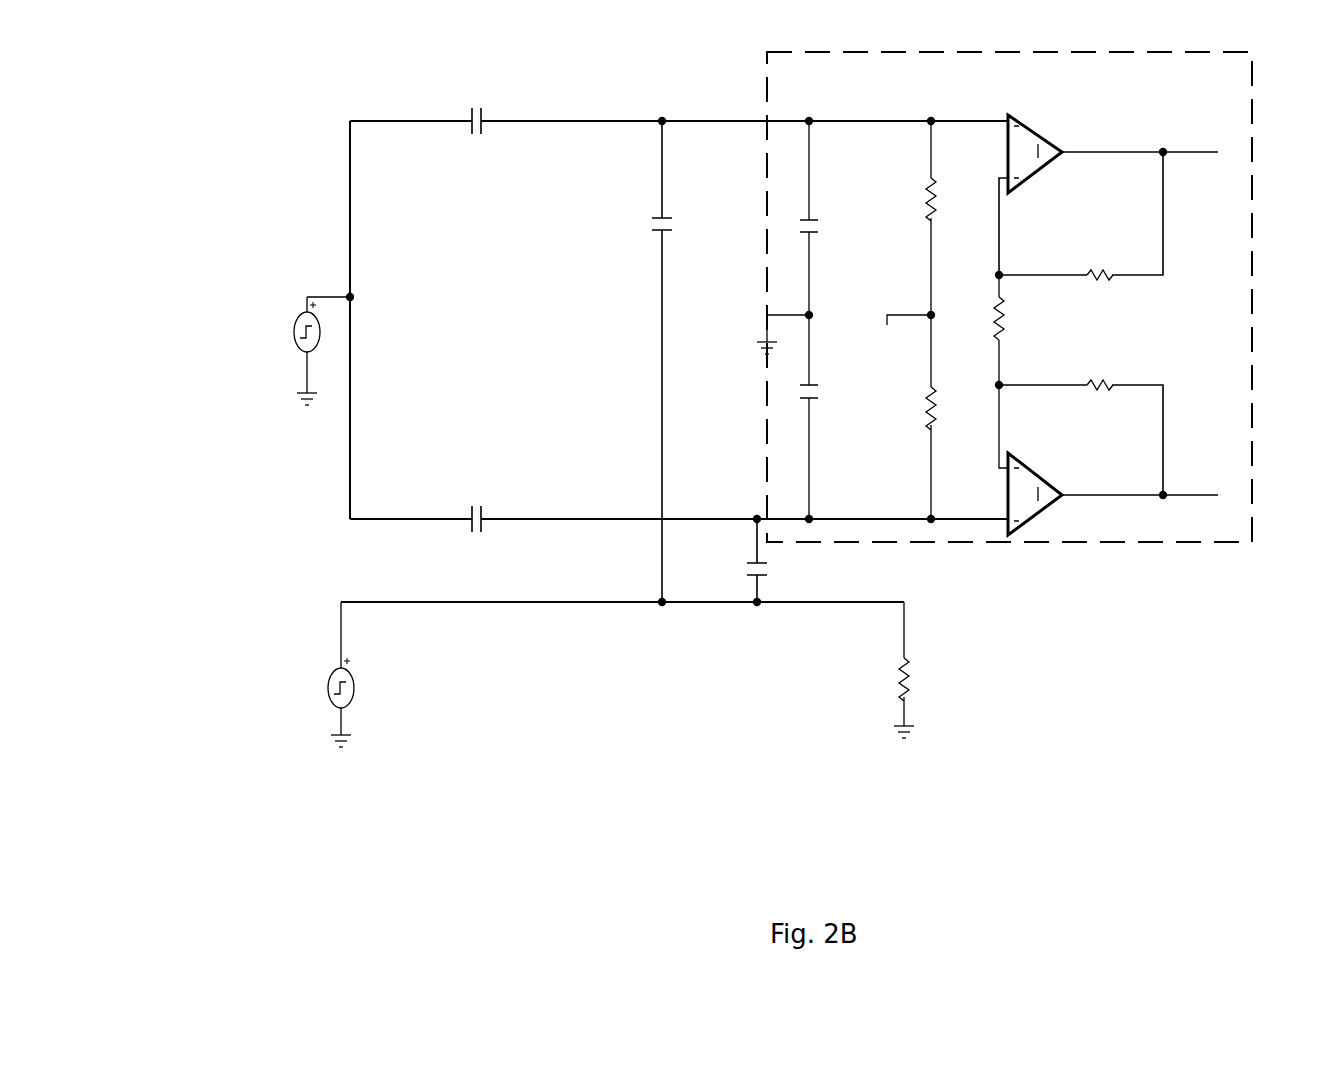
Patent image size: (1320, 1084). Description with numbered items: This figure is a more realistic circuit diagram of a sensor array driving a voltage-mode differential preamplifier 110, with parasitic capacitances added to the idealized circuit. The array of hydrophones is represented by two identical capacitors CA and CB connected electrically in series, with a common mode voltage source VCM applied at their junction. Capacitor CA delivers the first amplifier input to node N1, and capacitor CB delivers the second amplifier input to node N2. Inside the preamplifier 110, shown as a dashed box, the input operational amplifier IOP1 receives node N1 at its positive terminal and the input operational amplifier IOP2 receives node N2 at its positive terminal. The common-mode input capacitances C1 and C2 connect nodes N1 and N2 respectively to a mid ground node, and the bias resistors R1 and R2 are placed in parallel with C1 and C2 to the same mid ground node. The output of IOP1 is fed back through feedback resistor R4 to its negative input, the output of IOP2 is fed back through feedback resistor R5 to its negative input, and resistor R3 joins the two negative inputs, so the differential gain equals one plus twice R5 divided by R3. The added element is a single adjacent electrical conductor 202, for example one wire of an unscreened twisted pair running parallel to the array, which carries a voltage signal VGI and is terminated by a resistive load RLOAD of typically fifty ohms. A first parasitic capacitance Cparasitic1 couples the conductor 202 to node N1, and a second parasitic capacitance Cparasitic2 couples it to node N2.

The voltage-mode differential preamplifier 110 is at (1004, 359).
The adjacent electrical conductor 202 is at (622, 622).
The capacitor CA is at (478, 106).
The capacitor CB is at (478, 499).
The first parasitic capacitance Cparasitic1 is at (614, 362).
The second parasitic capacitance Cparasitic2 is at (805, 561).
The common-mode input capacitance C1 is at (829, 218).
The common-mode input capacitance C2 is at (829, 417).
The bias resistor R1 is at (912, 218).
The bias resistor R2 is at (912, 417).
The resistor R3 is at (1019, 330).
The feedback resistor R4 is at (1081, 216).
The feedback resistor R5 is at (1081, 418).
The input operational amplifier IOP1 is at (1044, 171).
The input operational amplifier IOP2 is at (1043, 480).
The node N1 is at (814, 101).
The node N2 is at (860, 504).
The common mode voltage source VCM is at (252, 327).
The voltage signal VG1 VGI is at (322, 674).
The resistive load RLoad RLOAD is at (870, 670).